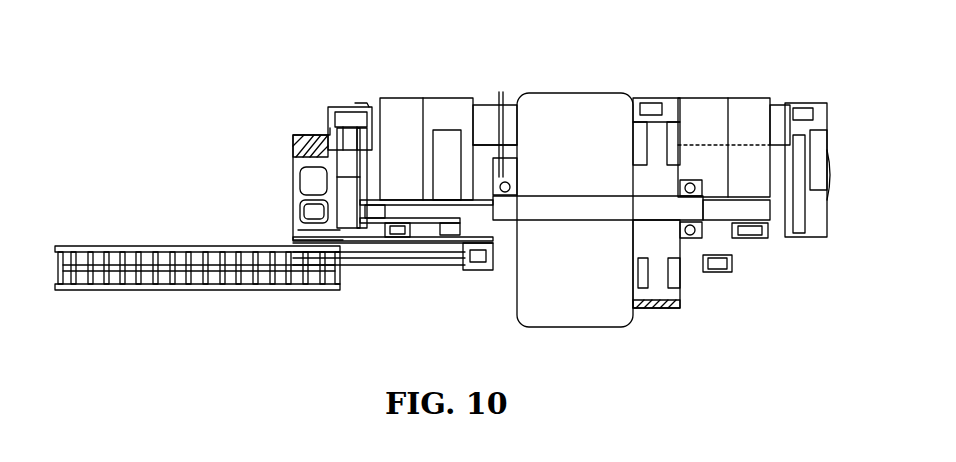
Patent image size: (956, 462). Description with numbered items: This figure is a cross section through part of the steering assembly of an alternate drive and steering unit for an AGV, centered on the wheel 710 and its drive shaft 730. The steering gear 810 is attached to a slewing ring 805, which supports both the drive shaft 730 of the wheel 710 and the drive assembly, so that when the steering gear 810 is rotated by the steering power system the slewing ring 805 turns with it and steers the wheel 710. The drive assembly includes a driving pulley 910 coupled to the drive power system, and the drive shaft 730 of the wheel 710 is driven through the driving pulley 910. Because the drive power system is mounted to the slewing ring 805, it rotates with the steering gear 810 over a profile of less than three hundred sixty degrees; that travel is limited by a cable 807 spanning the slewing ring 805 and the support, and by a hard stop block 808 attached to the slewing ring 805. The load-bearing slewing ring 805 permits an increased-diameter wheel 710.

The wheel 710 is at (620, 320).
The drive shaft 730 is at (632, 212).
The slewing ring 805 is at (398, 180).
The cable 807 is at (138, 248).
The hard stop block 808 is at (446, 157).
The steering gear 810 is at (332, 108).
The driving pulley 910 is at (670, 127).